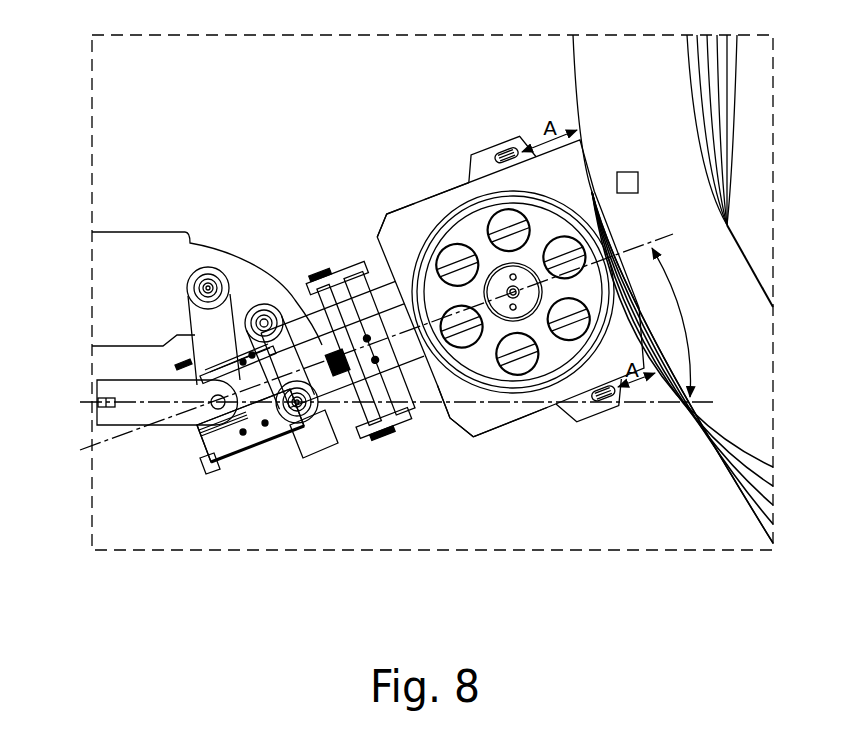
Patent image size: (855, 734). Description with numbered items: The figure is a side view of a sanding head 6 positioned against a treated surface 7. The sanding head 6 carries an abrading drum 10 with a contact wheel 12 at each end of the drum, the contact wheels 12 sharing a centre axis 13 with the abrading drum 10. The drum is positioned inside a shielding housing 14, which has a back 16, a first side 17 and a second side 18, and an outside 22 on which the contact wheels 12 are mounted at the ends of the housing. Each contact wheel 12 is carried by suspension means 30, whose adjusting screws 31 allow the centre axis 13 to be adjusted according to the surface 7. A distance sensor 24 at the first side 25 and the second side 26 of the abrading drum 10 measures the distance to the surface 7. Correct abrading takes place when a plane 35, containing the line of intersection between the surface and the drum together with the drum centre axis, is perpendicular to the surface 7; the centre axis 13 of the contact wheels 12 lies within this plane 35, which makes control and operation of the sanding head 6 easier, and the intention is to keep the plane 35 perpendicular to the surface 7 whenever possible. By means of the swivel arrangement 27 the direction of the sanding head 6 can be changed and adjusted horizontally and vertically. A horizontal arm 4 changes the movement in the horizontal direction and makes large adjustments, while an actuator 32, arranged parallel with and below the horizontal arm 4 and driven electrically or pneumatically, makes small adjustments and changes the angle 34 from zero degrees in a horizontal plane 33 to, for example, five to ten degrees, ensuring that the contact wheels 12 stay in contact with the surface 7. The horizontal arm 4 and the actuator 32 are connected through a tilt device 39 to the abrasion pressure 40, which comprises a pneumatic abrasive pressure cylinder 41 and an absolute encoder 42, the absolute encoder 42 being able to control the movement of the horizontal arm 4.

The horizontal arm 4 is at (133, 255).
The sanding head 6 is at (398, 160).
The treated surface 7 is at (574, 73).
The abrading drum 10 is at (591, 188).
The contact wheel 12 is at (480, 365).
The centre axis of the contact wheels 13 is at (543, 400).
The shielding housing 14 is at (504, 372).
The back 16 is at (447, 400).
The first side 17 is at (458, 183).
The second side 18 is at (502, 410).
The outside 22 is at (375, 220).
The distance sensor 24 is at (493, 147).
The first side of the abrading drum 25 is at (427, 195).
The second side of the abrading drum 26 is at (527, 407).
The swivel arrangement 27 is at (350, 420).
The suspension means 30 is at (447, 400).
The adjusting screw 31 is at (335, 352).
The actuator 32 is at (123, 403).
The horizontal plane 33 is at (632, 405).
The angle 34 is at (730, 186).
The plane 35 is at (667, 236).
The tilt device 39 is at (240, 357).
The abrasion pressure 40 is at (272, 437).
The pneumatic abrasive pressure cylinder 41 is at (252, 518).
The absolute encoder 42 is at (348, 445).